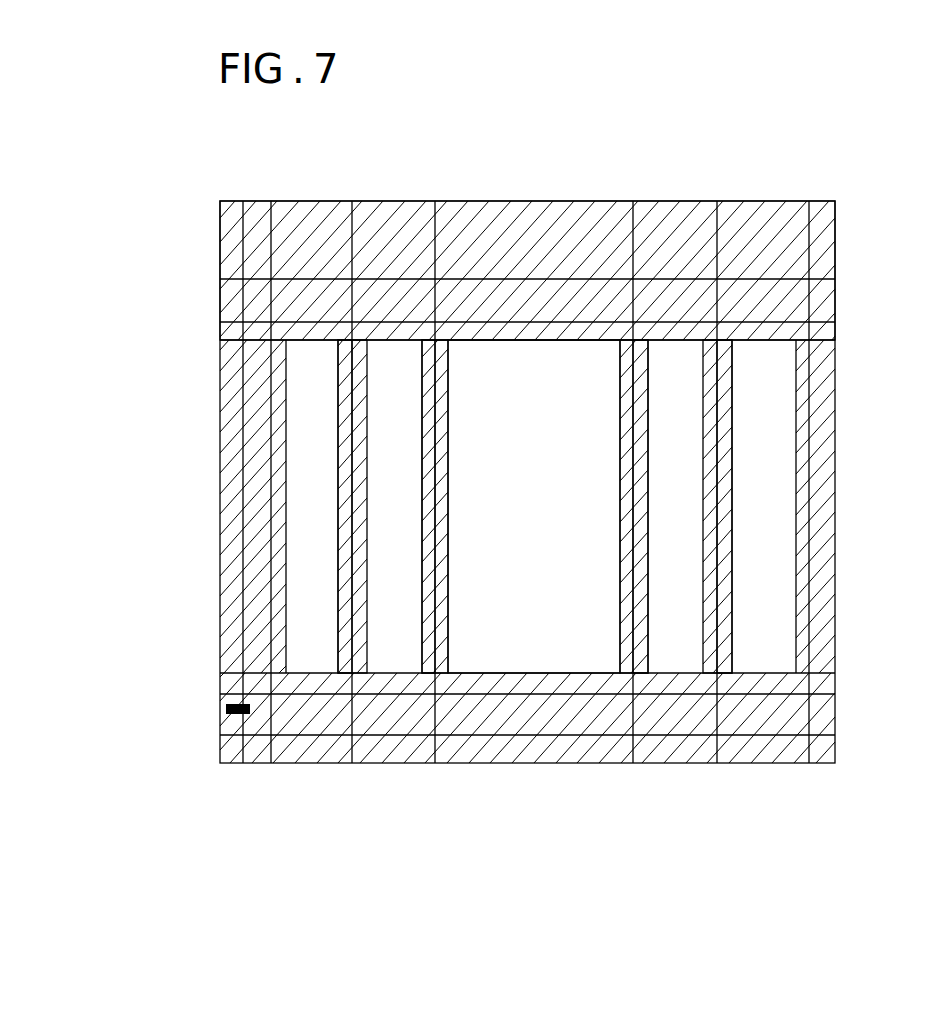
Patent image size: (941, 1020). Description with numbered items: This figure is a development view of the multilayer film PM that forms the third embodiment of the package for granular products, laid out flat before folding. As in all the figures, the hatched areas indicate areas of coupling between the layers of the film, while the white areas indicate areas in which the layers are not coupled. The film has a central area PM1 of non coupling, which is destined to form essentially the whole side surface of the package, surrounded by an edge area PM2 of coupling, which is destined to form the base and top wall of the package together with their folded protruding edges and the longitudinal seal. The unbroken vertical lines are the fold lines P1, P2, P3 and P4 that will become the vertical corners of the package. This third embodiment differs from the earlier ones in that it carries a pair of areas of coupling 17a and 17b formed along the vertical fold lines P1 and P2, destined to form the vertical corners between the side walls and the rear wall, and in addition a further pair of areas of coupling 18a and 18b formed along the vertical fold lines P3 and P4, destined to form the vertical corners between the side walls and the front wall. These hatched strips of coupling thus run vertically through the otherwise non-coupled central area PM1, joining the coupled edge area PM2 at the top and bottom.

The multilayer film PM is at (527, 413).
The central area of non coupling PM1 is at (578, 409).
The edge area of coupling PM2 is at (456, 248).
The vertical fold line P1 is at (718, 475).
The vertical fold line P2 is at (352, 482).
The vertical fold line P3 is at (440, 545).
The vertical fold line P4 is at (632, 563).
The area of coupling 17a is at (345, 603).
The area of coupling 17b is at (723, 404).
The area of coupling 18a is at (428, 404).
The area of coupling 18b is at (642, 612).